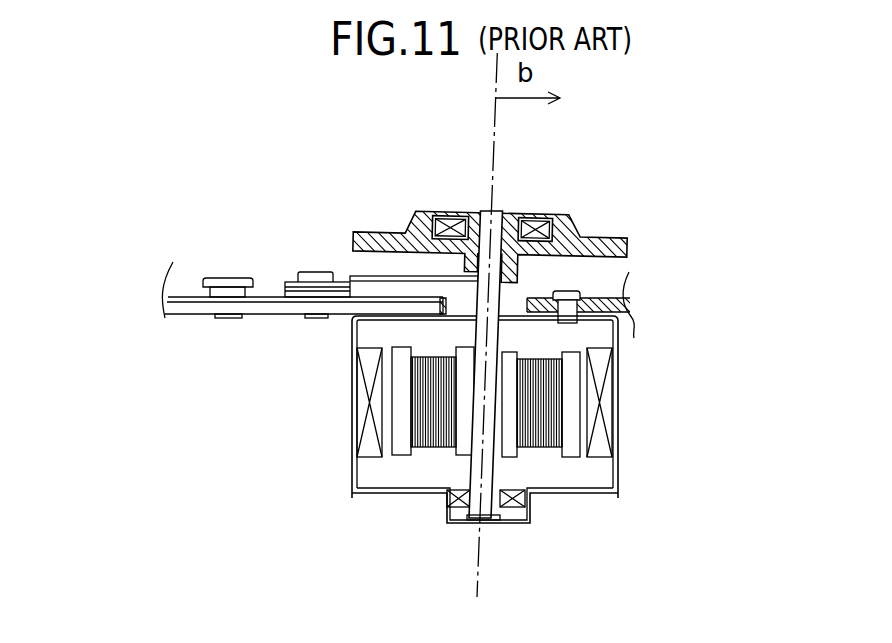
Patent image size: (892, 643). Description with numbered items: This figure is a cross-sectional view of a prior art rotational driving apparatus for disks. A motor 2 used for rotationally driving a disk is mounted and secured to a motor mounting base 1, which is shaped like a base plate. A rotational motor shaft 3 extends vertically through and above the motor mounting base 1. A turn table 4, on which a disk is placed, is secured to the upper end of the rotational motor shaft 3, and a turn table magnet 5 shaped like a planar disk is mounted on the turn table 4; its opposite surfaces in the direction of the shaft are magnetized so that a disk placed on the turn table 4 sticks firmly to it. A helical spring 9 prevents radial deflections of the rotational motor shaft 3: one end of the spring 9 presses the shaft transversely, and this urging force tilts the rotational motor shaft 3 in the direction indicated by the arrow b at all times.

The motor mounting base 1 is at (600, 300).
The motor 2 is at (619, 474).
The rotational motor shaft 3 is at (503, 215).
The turn table 4 is at (625, 242).
The turn table magnet 5 is at (536, 218).
The helical spring 9 is at (367, 278).